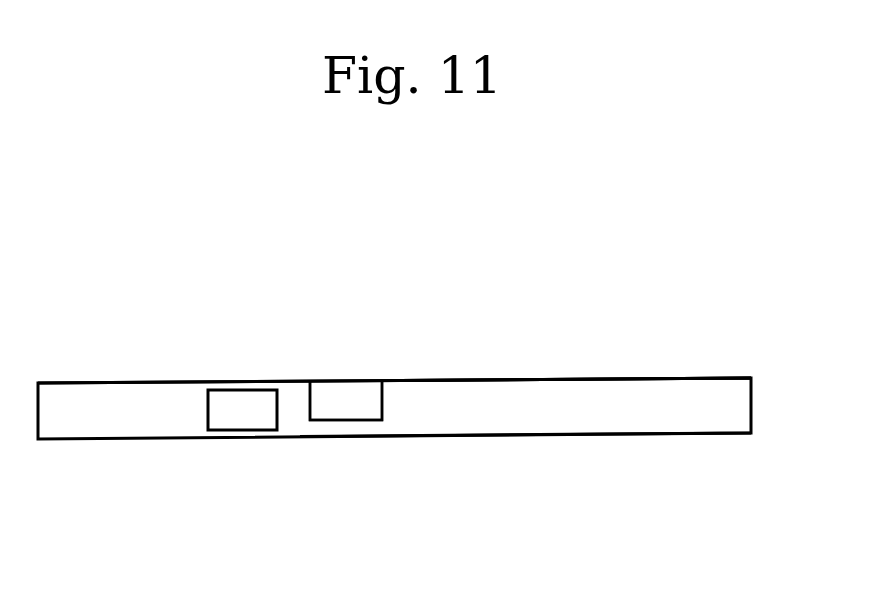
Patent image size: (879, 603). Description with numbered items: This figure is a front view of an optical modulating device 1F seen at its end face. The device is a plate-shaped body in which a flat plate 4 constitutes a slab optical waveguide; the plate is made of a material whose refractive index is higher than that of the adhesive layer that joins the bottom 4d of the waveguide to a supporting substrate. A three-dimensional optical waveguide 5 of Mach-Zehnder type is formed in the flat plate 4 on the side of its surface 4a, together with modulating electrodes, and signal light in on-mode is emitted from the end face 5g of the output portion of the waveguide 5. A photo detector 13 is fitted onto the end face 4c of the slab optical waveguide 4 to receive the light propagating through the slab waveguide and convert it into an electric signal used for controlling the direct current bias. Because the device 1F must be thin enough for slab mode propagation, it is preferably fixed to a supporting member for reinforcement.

The optical modulating device 1F is at (822, 285).
The slab type optical waveguide 4 is at (434, 408).
The surface of the flat plate 4a is at (575, 327).
The end face of the slab optical waveguide 4c is at (675, 478).
The bottom of the waveguide 4d is at (450, 496).
The three-dimensional optical waveguide 5 is at (333, 368).
The end face of the output portion 5g is at (355, 357).
The photo detector 13 is at (242, 362).